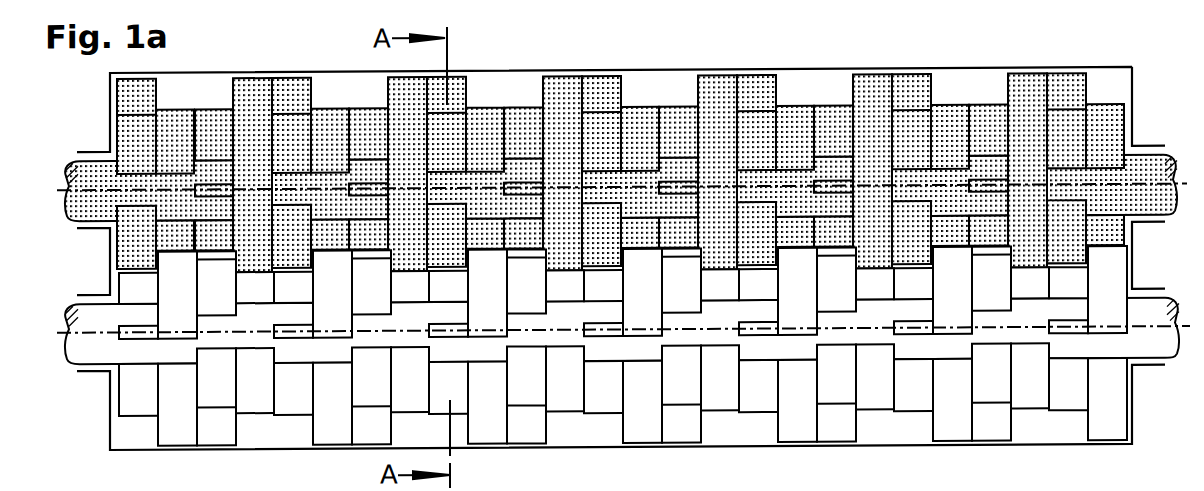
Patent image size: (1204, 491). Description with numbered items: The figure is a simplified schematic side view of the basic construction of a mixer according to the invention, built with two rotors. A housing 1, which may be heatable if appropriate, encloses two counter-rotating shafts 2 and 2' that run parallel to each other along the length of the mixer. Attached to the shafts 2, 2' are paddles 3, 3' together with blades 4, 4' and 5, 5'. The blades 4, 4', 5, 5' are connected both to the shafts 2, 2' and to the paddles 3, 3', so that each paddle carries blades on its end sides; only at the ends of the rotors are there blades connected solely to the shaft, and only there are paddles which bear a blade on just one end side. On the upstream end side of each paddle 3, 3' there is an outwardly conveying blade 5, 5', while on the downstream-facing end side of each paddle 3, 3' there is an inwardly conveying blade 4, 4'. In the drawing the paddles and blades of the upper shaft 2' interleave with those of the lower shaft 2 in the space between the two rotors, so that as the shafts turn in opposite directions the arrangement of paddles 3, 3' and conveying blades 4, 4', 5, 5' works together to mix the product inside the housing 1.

The housing 1 is at (1135, 439).
The shaft 2 is at (622, 359).
The shaft 2' is at (621, 218).
The paddle 3 is at (952, 368).
The inwardly conveying blade 4 is at (991, 368).
The outwardly conveying blade 5 is at (909, 378).
The paddle 3' is at (718, 145).
The inwardly conveying blade 4' is at (770, 143).
The outwardly conveying blade 5' is at (669, 134).